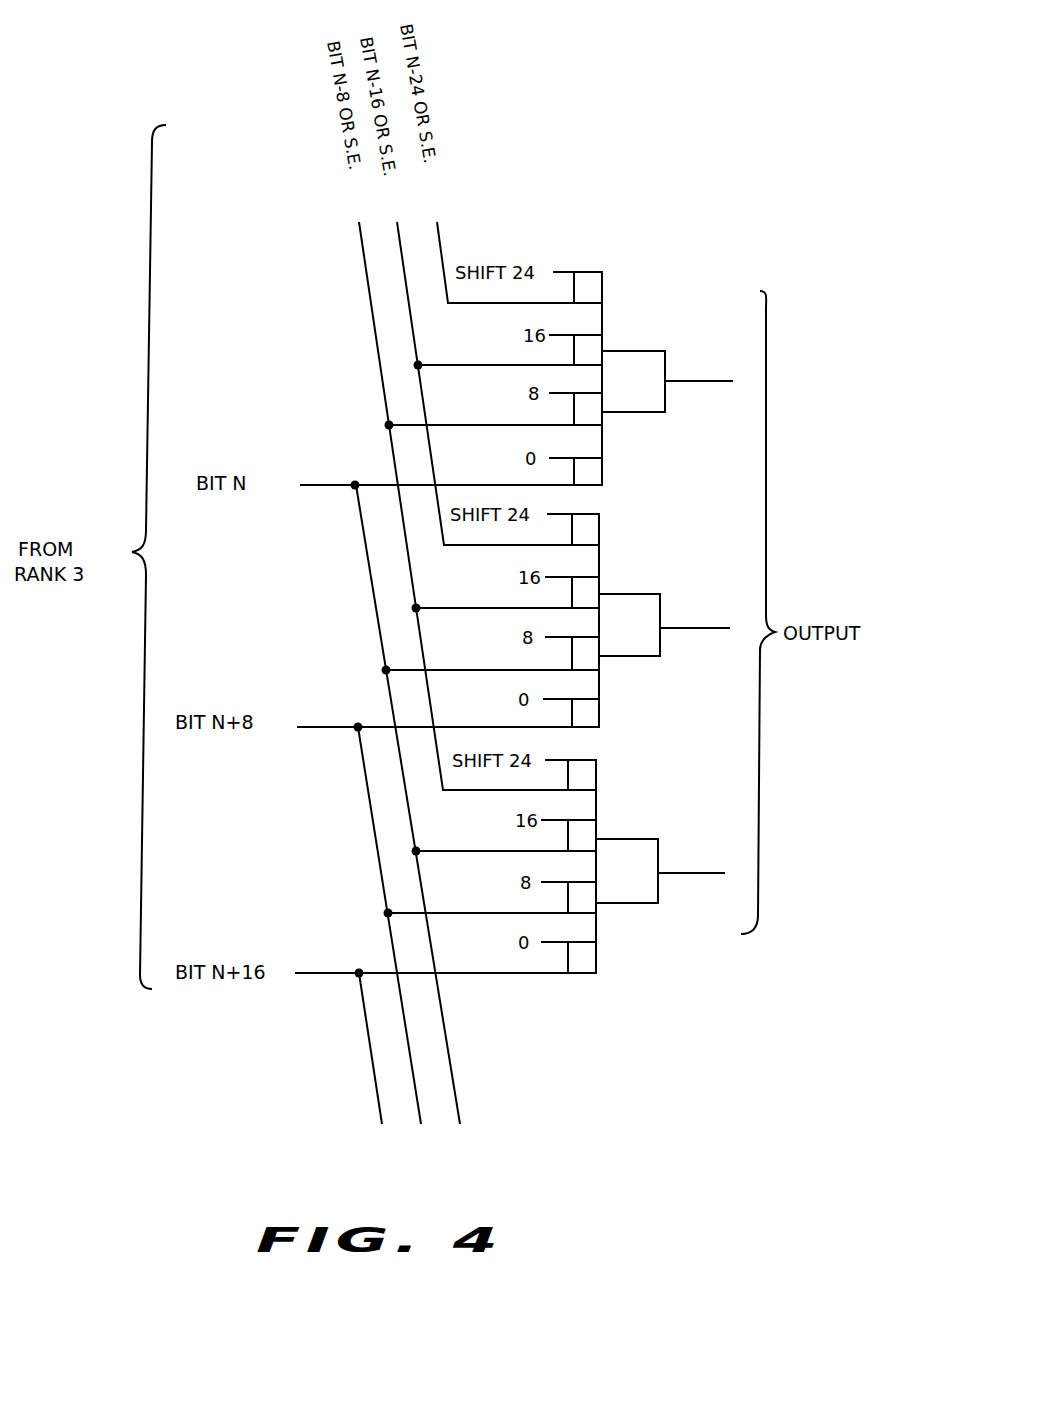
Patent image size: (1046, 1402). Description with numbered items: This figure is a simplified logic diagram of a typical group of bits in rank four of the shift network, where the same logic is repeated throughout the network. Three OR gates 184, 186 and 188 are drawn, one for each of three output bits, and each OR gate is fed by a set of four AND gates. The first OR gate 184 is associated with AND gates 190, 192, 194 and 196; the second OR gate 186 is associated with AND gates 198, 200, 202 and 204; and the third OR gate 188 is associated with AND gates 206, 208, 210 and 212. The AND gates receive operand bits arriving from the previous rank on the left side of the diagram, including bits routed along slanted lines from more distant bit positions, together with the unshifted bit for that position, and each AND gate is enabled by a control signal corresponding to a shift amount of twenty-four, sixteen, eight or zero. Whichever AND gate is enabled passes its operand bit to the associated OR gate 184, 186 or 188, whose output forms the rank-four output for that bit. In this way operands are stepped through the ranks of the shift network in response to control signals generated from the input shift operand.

The OR gate 184 is at (654, 351).
The OR gate 186 is at (650, 594).
The OR gate 188 is at (660, 860).
The AND gate 190 is at (596, 271).
The AND gate 192 is at (606, 341).
The AND gate 194 is at (603, 420).
The AND gate 196 is at (603, 470).
The AND gate 198 is at (600, 528).
The AND gate 200 is at (603, 587).
The AND gate 202 is at (600, 664).
The AND gate 204 is at (600, 712).
The AND gate 206 is at (597, 776).
The AND gate 208 is at (598, 832).
The AND gate 210 is at (597, 910).
The AND gate 212 is at (597, 962).